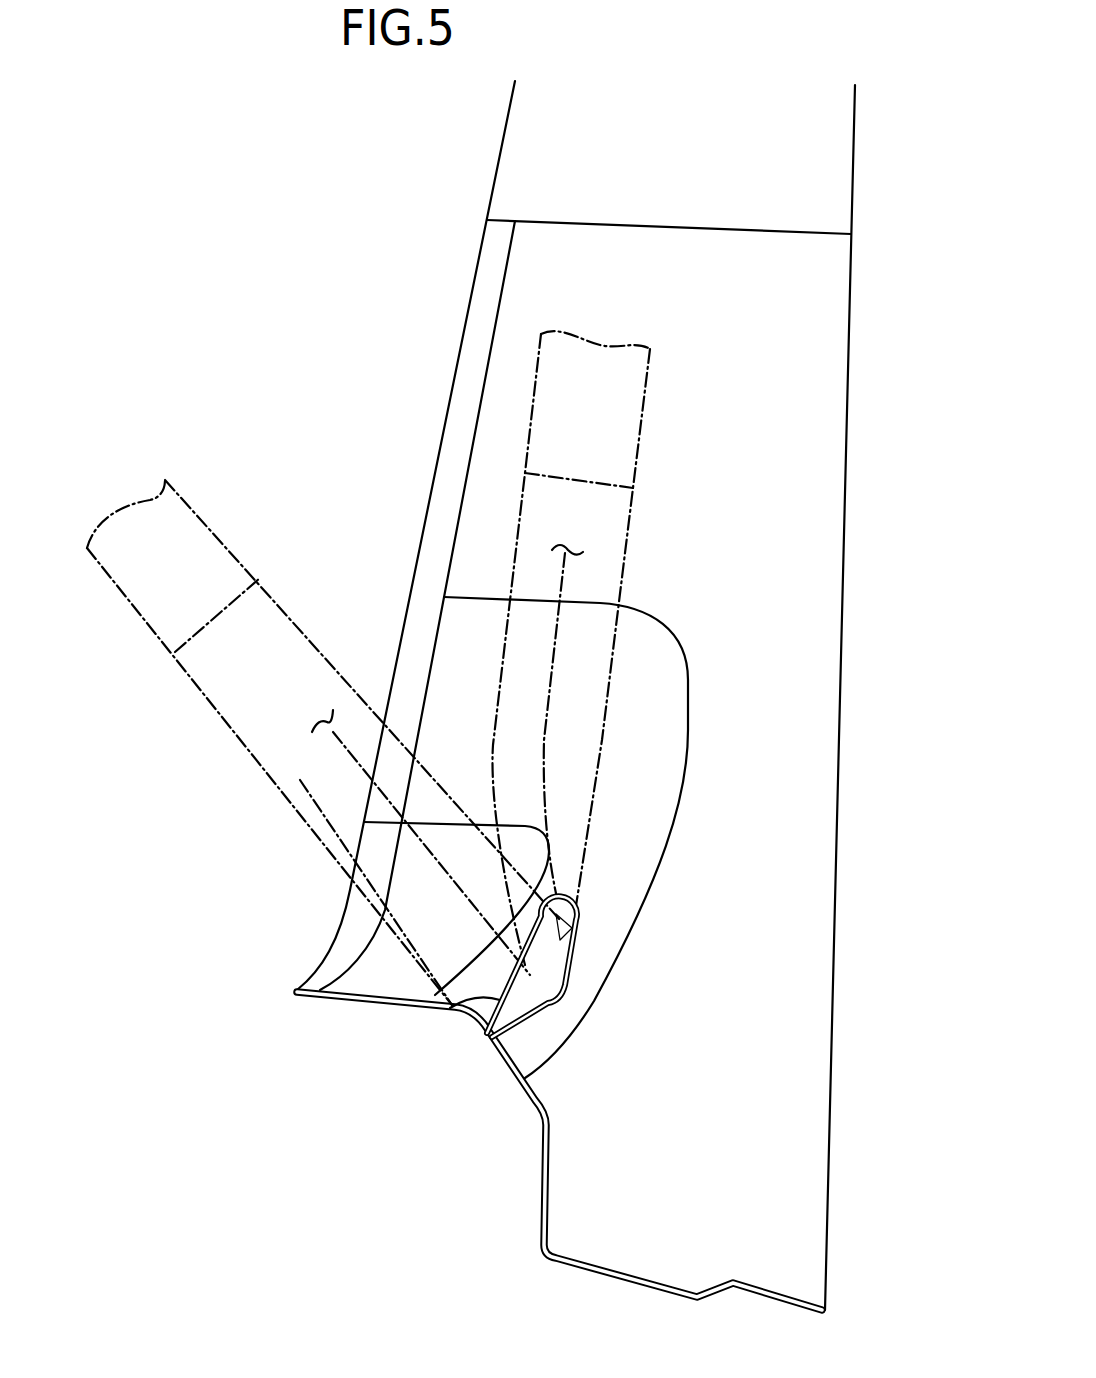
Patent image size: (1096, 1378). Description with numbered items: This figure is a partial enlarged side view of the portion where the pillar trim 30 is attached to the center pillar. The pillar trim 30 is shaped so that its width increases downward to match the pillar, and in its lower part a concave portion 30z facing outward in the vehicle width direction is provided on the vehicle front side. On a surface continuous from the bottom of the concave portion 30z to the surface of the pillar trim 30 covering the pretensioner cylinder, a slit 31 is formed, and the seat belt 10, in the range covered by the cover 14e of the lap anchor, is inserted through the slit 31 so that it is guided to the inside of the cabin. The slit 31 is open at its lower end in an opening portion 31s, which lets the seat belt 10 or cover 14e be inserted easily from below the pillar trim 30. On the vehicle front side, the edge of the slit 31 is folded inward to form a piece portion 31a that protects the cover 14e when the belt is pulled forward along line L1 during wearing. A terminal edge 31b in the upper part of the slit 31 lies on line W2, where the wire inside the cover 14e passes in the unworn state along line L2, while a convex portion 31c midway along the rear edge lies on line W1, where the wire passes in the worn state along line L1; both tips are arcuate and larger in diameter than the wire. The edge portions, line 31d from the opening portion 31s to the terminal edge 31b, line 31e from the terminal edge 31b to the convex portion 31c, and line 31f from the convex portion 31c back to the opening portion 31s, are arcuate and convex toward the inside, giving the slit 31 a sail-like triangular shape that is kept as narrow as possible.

The seat belt 10 is at (216, 703).
The cover 14e is at (263, 881).
The pillar trim 30 is at (790, 465).
The concave portion 30z is at (661, 795).
The slit 31 is at (523, 998).
The piece portion 31a is at (457, 1010).
The terminal edge 31b is at (575, 911).
The convex portion 31c is at (565, 1015).
The line 31d is at (520, 957).
The line 31e is at (572, 954).
The line 31f is at (542, 1012).
The opening portion 31s is at (481, 1040).
The line L1 is at (273, 752).
The line L2 is at (605, 722).
The line W1 is at (360, 767).
The line W2 is at (553, 665).